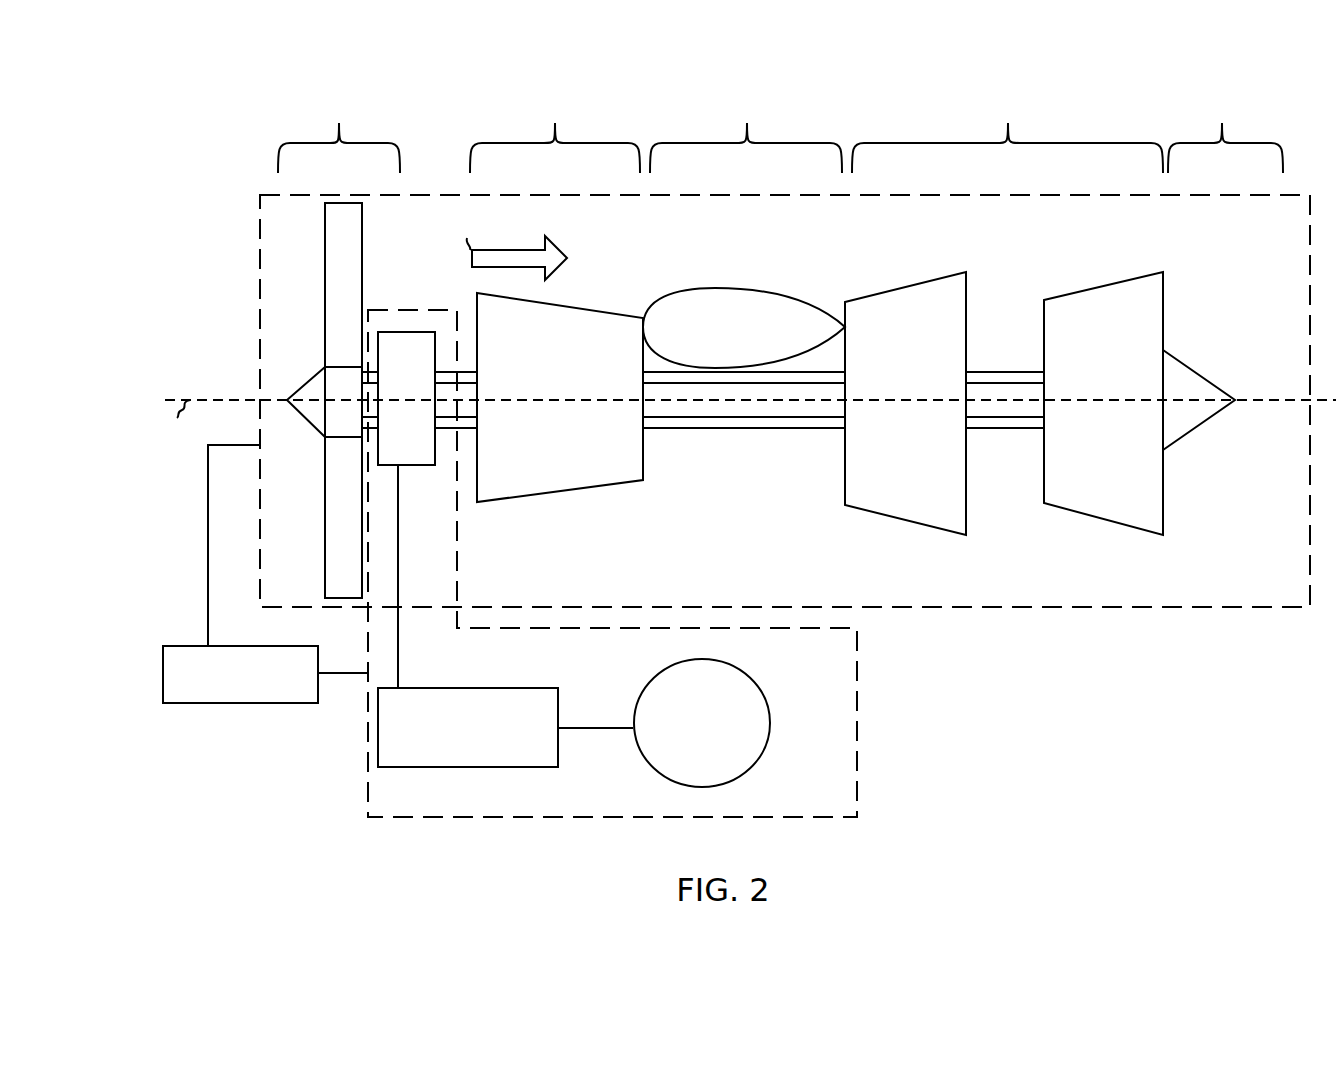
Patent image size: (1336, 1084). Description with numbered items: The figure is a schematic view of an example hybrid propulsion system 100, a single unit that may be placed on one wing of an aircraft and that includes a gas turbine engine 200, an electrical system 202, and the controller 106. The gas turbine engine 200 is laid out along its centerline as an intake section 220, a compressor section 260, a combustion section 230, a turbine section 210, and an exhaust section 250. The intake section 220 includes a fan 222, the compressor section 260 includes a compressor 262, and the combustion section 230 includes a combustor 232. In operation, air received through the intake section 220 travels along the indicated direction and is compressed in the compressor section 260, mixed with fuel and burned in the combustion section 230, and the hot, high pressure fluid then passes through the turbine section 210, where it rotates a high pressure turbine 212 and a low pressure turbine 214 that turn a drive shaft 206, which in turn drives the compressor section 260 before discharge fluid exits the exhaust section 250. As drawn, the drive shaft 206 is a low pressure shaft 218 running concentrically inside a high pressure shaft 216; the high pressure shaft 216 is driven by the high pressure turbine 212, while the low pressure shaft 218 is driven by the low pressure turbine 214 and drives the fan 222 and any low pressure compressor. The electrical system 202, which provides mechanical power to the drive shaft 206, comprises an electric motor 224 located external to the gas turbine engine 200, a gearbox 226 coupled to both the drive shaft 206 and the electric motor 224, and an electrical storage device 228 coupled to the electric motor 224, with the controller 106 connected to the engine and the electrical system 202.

The hybrid propulsion system 100 is at (165, 179).
The gas turbine engine 200 is at (260, 313).
The intake section 220 is at (339, 134).
The compressor section 260 is at (555, 134).
The combustion section 230 is at (746, 134).
The turbine section 210 is at (1007, 134).
The exhaust section 250 is at (1223, 273).
The fan 222 is at (355, 292).
The compressor 262 is at (530, 497).
The combustor 232 is at (728, 288).
The high pressure turbine 212 is at (930, 281).
The low pressure turbine 214 is at (1118, 284).
The drive shaft 206 is at (685, 432).
The high pressure shaft 216 is at (733, 423).
The low pressure shaft 218 is at (805, 410).
The gearbox 226 is at (418, 468).
The electric motor 224 is at (505, 688).
The electrical storage device 228 is at (747, 773).
The electrical system 202 is at (858, 722).
The controller 106 is at (192, 705).